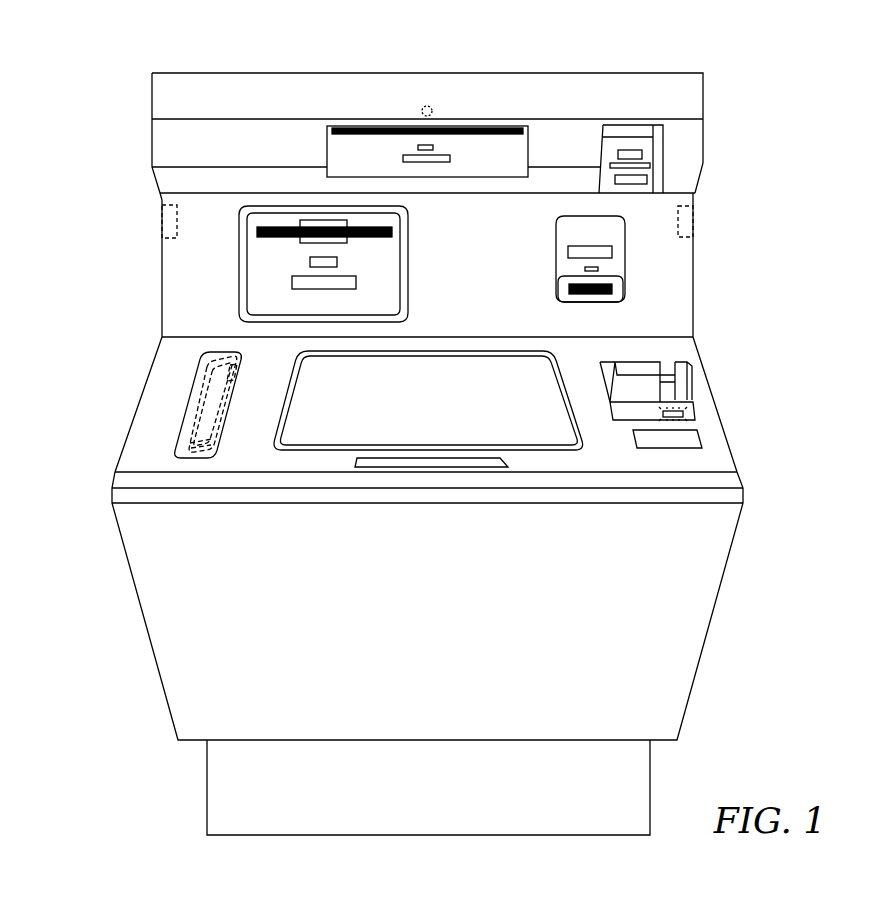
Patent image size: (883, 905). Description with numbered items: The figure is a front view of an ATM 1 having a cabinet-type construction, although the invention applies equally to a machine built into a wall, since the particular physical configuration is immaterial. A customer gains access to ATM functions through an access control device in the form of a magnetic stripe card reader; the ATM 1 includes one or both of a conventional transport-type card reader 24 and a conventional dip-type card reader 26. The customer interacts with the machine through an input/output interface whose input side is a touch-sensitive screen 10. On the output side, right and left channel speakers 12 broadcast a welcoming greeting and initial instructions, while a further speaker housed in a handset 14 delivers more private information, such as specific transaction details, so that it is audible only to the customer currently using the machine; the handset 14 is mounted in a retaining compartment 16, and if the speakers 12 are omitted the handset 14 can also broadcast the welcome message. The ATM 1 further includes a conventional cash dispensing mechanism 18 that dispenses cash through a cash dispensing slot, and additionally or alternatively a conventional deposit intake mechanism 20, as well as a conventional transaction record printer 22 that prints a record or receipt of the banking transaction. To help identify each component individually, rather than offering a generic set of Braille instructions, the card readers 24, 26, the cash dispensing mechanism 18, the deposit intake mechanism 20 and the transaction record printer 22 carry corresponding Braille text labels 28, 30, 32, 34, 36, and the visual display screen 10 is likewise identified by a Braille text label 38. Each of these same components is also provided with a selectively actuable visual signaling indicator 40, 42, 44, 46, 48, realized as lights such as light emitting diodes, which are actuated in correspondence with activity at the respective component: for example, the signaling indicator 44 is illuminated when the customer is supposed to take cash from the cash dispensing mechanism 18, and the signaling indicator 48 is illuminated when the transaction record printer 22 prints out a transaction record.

The ATM 1 is at (820, 245).
The touch-sensitive screen 10 is at (584, 448).
The speakers 12 is at (167, 221).
The handset 14 is at (200, 432).
The retaining compartment 16 is at (190, 397).
The cash dispensing mechanism 18 is at (257, 229).
The deposit intake mechanism 20 is at (612, 293).
The transaction record printer 22 is at (447, 128).
The transport-type card reader 24 is at (642, 155).
The dip-type card reader 26 is at (684, 365).
The Braille text label 28 is at (648, 180).
The Braille text label 30 is at (698, 440).
The Braille text label 32 is at (292, 283).
The Braille text label 34 is at (612, 252).
The Braille text label 36 is at (403, 158).
The Braille text label 38 is at (500, 463).
The visual signaling indicator 40 is at (653, 137).
The visual signaling indicator 42 is at (684, 412).
The visual signaling indicator 44 is at (310, 262).
The visual signaling indicator 46 is at (598, 268).
The visual signaling indicator 48 is at (418, 147).